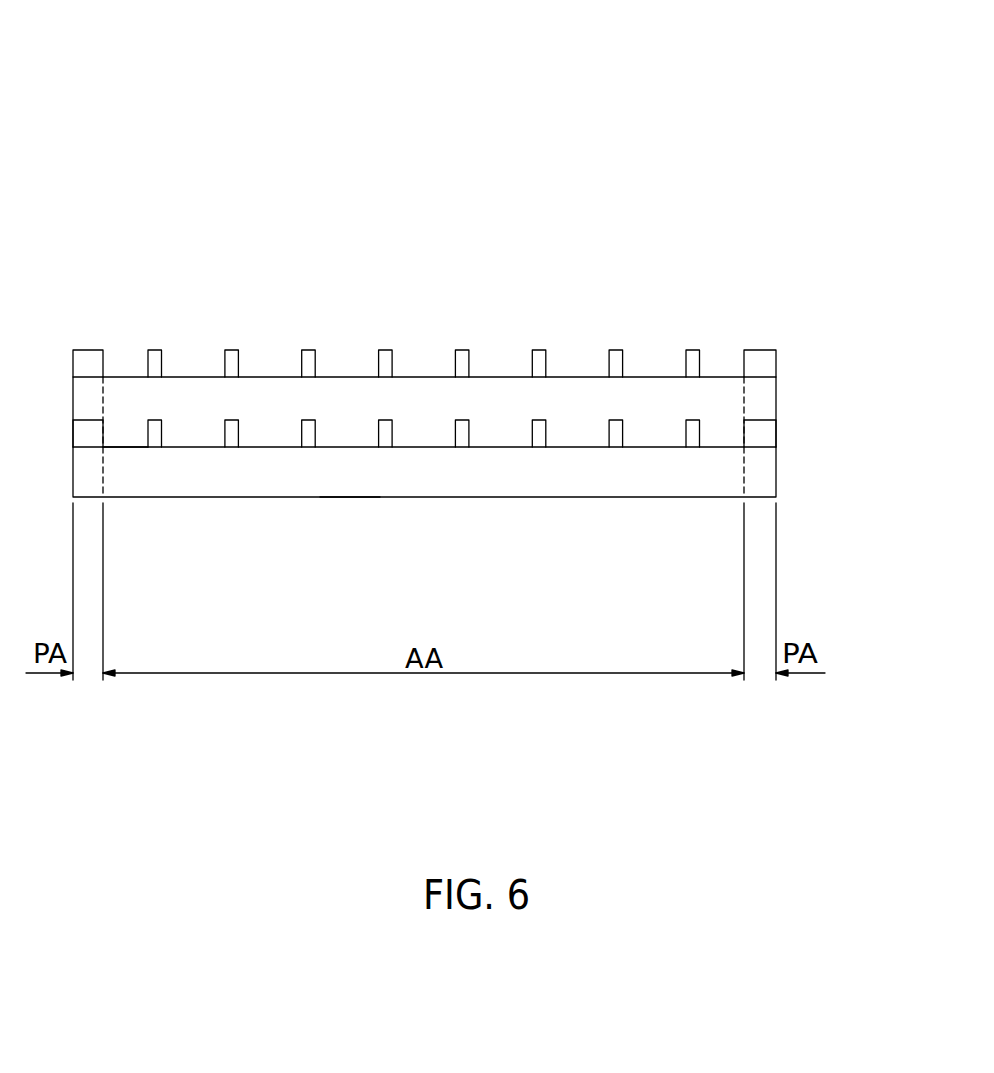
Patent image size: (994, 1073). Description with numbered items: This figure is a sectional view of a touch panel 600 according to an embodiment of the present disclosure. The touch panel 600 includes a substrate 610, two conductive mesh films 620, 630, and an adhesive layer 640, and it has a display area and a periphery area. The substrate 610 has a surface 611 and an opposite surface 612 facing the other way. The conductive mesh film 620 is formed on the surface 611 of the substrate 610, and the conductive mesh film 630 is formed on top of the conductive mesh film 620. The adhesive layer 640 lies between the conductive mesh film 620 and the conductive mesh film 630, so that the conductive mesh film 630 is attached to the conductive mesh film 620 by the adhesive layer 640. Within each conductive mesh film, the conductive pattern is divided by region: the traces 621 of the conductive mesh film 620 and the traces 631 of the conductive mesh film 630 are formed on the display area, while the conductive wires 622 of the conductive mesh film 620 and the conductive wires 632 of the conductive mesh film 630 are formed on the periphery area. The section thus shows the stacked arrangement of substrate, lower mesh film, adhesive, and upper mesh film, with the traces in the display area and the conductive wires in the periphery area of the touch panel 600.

The touch panel 600 is at (668, 32).
The substrate 610 is at (247, 497).
The surface 611 is at (130, 436).
The surface 612 is at (348, 509).
The conductive mesh film 620 is at (496, 426).
The traces 621 is at (699, 421).
The conductive wires 622 is at (758, 435).
The conductive mesh film 630 is at (496, 352).
The traces 631 is at (699, 352).
The conductive wires 632 is at (758, 365).
The adhesive layer 640 is at (573, 397).